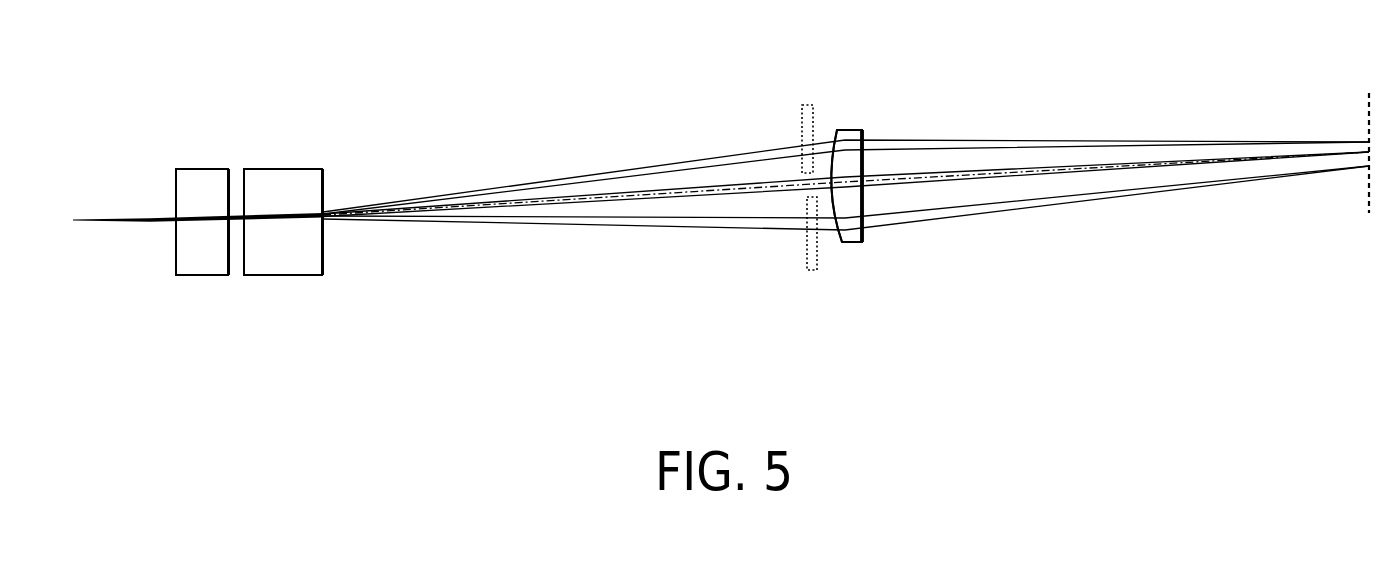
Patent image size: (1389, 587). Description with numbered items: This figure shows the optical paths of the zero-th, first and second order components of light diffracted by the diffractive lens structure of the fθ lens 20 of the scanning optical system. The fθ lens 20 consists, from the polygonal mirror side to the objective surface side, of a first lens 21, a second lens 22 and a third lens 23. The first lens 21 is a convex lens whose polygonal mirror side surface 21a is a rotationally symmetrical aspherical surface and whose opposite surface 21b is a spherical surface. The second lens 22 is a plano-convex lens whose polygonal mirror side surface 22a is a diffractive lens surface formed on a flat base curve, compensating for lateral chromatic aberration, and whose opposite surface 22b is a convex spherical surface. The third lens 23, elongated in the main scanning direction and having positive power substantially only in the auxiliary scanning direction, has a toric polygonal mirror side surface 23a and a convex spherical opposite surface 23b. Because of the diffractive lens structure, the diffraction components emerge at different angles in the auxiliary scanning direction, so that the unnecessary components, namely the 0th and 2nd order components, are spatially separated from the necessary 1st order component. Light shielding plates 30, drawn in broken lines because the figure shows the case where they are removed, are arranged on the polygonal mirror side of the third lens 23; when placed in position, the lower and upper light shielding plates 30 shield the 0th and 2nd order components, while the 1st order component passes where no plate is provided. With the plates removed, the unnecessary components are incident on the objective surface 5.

The fθ lens 20 is at (367, 286).
The first lens 21 is at (205, 268).
The polygonal mirror side surface of the first lens 21a is at (176, 187).
The opposite surface of the first lens 21b is at (232, 190).
The second lens 22 is at (287, 268).
The diffractive lens surface 22a is at (243, 190).
The opposite surface of the second lens 22b is at (325, 188).
The third lens 23 is at (855, 234).
The polygonal mirror side surface of the third lens 23a is at (837, 129).
The opposite surface of the third lens 23b is at (866, 132).
The light shielding plates 30 is at (800, 125).
The objective surface 5 is at (1369, 183).
The second order diffraction component 2nd is at (590, 170).
The first order diffraction component 1st is at (530, 207).
The zero-th order diffraction component 0th is at (650, 228).